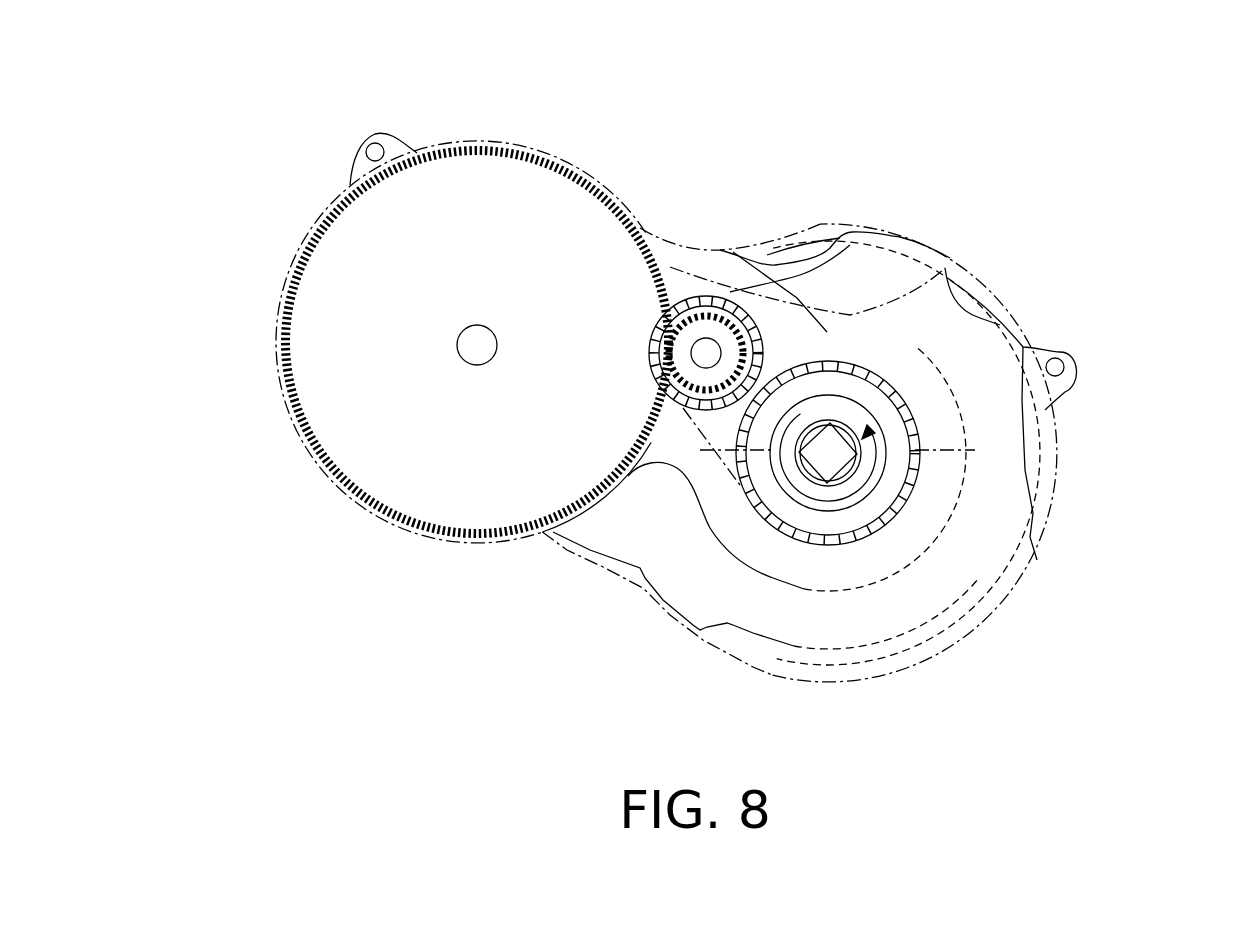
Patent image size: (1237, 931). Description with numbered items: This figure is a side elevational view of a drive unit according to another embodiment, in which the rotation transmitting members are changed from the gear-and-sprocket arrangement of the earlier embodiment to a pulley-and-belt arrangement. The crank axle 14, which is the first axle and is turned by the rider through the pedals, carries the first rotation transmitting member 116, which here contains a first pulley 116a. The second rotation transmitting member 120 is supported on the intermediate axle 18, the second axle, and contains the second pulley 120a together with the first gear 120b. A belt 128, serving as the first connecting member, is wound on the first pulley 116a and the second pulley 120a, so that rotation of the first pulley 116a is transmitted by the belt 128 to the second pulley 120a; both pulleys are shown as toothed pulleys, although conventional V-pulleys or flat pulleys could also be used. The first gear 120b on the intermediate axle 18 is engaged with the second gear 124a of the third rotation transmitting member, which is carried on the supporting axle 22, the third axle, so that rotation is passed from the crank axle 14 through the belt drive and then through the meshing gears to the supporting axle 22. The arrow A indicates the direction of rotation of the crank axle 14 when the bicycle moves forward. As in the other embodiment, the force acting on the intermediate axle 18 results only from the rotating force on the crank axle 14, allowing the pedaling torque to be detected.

The crank axle 14 is at (828, 453).
The intermediate axle 18 is at (700, 347).
The supporting axle 22 is at (472, 347).
The first rotation transmitting member 116 is at (885, 358).
The first pulley 116a is at (912, 414).
The second rotation transmitting member 120 is at (725, 312).
The second pulley 120a is at (687, 300).
The first gear 120b is at (783, 308).
The second gear 124a is at (532, 157).
The belt 128 is at (940, 265).
The direction of rotation arrow A is at (848, 510).